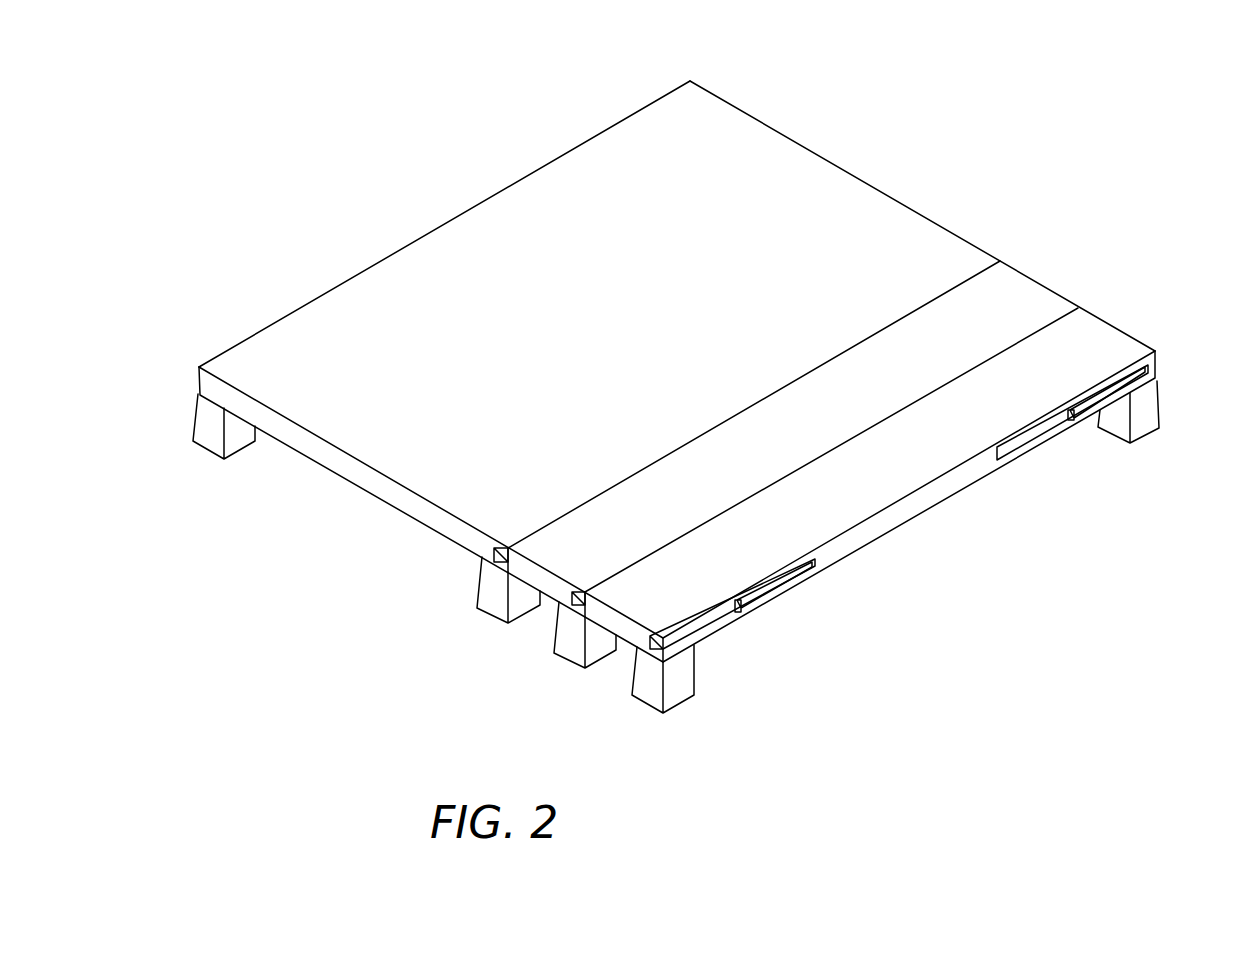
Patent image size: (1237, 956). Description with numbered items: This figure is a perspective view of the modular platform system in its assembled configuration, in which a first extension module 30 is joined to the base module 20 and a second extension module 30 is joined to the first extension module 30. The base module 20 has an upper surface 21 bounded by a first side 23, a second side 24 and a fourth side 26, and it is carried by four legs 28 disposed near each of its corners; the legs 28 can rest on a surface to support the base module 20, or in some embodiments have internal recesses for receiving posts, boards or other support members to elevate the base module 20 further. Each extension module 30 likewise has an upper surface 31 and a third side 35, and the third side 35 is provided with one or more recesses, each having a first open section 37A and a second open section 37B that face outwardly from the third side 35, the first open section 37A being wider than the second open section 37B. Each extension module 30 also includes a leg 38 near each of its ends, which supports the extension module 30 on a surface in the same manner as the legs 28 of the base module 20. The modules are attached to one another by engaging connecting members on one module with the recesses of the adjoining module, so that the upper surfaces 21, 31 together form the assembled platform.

The base module 20 is at (786, 108).
The upper surface 21 is at (616, 331).
The first side 23 is at (445, 222).
The second side 24 is at (843, 169).
The fourth side 26 is at (355, 473).
The legs 28 is at (208, 442).
The extension module 30 is at (1051, 264).
The upper surface 31 is at (810, 444).
The third side 35 is at (920, 505).
The first open section 37A is at (712, 620).
The second open section 37B is at (802, 568).
The leg 38 is at (570, 653).